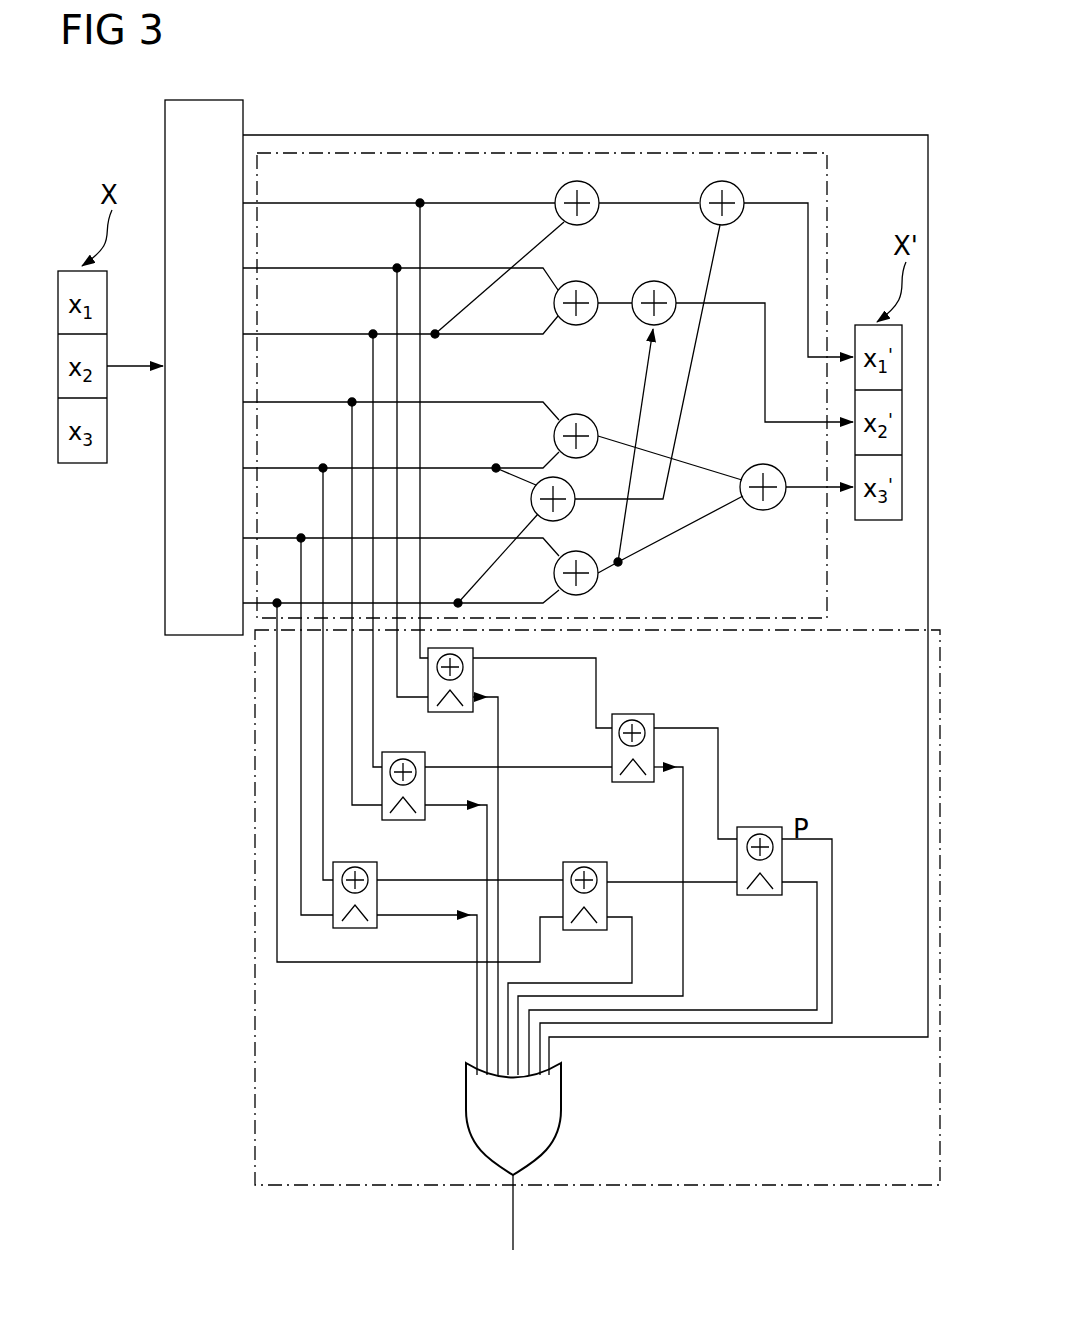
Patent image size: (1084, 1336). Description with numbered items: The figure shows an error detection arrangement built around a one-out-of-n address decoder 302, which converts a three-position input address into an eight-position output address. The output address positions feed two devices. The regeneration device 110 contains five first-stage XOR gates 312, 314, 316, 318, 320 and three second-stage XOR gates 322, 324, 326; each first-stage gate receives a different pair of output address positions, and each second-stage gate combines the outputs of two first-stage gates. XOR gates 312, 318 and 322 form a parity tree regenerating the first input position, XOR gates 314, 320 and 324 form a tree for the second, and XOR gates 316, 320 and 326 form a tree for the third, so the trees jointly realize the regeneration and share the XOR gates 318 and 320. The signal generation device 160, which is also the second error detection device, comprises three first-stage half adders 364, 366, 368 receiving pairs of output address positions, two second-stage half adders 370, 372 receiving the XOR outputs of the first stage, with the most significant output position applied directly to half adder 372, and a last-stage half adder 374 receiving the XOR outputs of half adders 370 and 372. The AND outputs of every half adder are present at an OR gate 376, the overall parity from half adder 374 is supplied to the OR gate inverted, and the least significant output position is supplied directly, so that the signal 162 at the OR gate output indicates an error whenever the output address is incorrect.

The address decoder 302 is at (212, 100).
The regeneration device 110 is at (828, 218).
The XOR gate 312 is at (555, 195).
The XOR gate 314 is at (592, 290).
The XOR gate 316 is at (592, 420).
The XOR gate 318 is at (531, 499).
The XOR gate 320 is at (598, 582).
The XOR gate 322 is at (736, 224).
The XOR gate 324 is at (658, 281).
The XOR gate 326 is at (763, 511).
The signal generation device 160 is at (256, 1034).
The half adder 364 is at (475, 672).
The half adder 366 is at (426, 766).
The half adder 368 is at (378, 876).
The half adder 370 is at (634, 714).
The half adder 372 is at (588, 862).
The half adder 374 is at (760, 827).
The OR gate 376 is at (563, 1104).
The signal 162 is at (515, 1212).